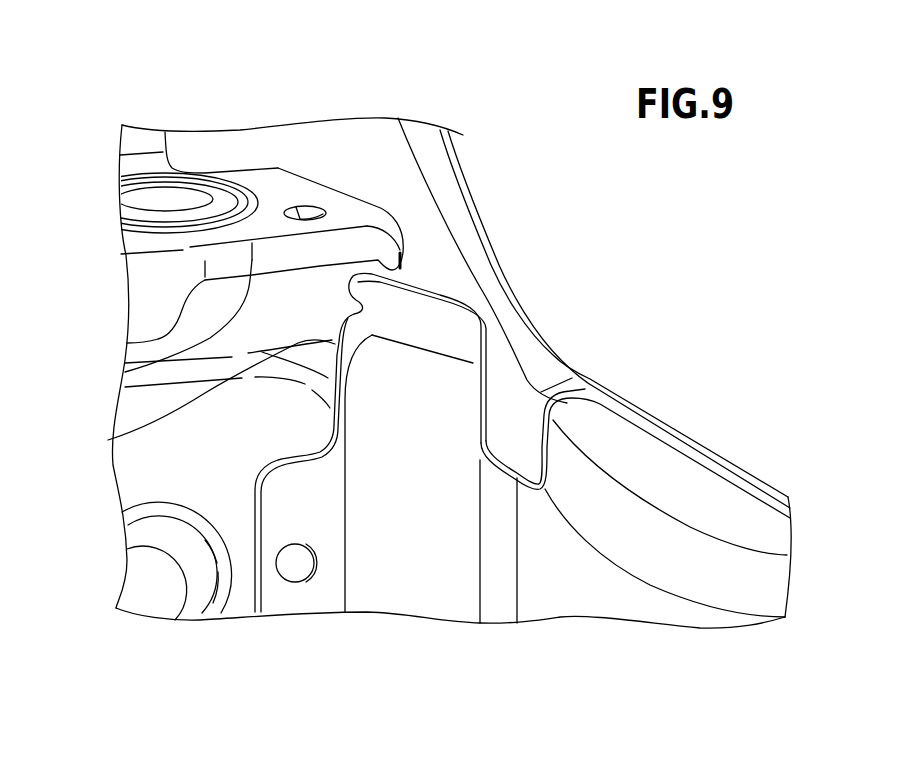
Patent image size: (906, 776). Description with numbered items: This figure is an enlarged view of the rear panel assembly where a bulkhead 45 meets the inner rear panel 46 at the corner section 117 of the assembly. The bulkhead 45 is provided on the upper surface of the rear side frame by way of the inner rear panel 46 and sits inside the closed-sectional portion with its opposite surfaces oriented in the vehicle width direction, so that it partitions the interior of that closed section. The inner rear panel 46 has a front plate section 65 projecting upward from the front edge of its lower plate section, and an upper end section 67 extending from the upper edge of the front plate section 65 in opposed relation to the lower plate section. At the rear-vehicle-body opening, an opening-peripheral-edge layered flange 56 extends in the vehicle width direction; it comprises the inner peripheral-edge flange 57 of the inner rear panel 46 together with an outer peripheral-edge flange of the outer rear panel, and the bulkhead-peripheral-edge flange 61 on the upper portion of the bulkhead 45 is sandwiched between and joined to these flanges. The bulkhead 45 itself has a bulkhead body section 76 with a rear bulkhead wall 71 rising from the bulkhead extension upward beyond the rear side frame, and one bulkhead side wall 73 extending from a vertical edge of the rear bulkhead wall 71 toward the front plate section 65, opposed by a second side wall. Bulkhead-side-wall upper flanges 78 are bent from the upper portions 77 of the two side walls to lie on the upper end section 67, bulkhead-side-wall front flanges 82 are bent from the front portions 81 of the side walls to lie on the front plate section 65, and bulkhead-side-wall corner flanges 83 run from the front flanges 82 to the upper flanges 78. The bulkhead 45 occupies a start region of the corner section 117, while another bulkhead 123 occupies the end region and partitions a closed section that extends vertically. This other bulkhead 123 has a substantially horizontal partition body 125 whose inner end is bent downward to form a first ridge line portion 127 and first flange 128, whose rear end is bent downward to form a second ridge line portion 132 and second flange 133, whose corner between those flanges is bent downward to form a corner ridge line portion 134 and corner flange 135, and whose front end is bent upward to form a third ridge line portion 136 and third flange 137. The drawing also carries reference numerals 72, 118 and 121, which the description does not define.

The bulkhead 45 is at (540, 388).
The inner rear panel 46 is at (295, 123).
The opening-peripheral-edge layered flange 56 is at (693, 457).
The inner peripheral-edge flange 57 is at (637, 417).
The bulkhead-peripheral-edge flange 61 is at (703, 495).
The front plate section 65 is at (241, 612).
The upper end section 67 is at (443, 340).
The rear bulkhead wall 71 is at (587, 587).
The vertical wall 72 is at (523, 593).
The bulkhead side wall 73 is at (433, 563).
The bulkhead body section 76 is at (462, 625).
The upper portions of the bulkhead side walls 77 is at (502, 415).
The bulkhead-side-wall upper flanges 78 is at (447, 380).
The front portions of the bulkhead side walls 81 is at (362, 610).
The bulkhead-side-wall front flanges 82 is at (299, 613).
The bulkhead-side-wall corner flanges 83 is at (108, 440).
The corner section 117 is at (590, 373).
The outer flange 118 is at (770, 497).
The front pillar 121 is at (457, 165).
The other bulkhead 123 is at (243, 168).
The partition body 125 is at (133, 246).
The first ridge line portion 127 is at (323, 183).
The first flange 128 is at (446, 278).
The second ridge line portion 132 is at (125, 372).
The second flange 133 is at (150, 310).
The corner ridge line portion 134 is at (371, 203).
The corner flange 135 is at (385, 257).
The third ridge line portion 136 is at (120, 165).
The third flange 137 is at (143, 137).